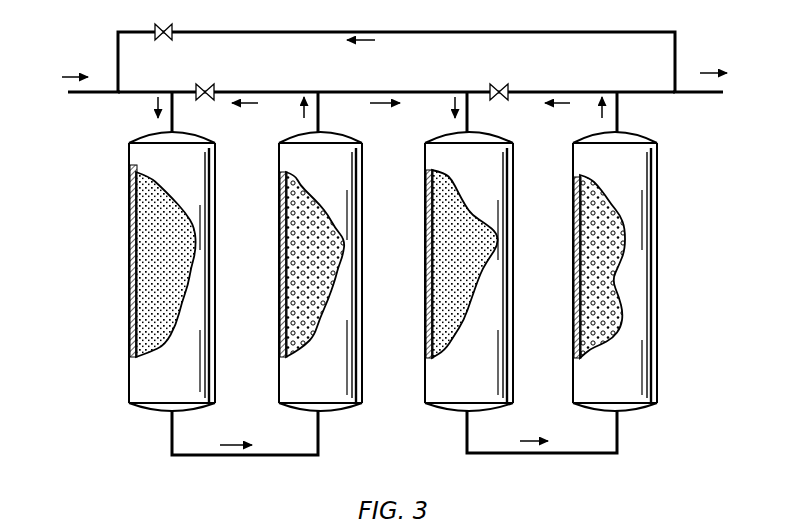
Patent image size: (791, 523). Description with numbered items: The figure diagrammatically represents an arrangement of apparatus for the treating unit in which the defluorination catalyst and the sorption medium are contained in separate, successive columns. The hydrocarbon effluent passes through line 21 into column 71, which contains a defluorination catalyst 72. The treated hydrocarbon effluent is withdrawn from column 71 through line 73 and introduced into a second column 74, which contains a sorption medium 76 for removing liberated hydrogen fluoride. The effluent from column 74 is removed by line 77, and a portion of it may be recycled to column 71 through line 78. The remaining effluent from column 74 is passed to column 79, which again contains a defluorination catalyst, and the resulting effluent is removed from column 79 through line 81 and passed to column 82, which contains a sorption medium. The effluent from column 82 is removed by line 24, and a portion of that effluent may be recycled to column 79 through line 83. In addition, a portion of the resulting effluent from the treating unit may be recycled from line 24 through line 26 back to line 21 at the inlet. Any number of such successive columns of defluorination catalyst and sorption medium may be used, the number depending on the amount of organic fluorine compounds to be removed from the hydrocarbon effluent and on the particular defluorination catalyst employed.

The line 21 is at (98, 94).
The line 24 is at (698, 92).
The line 26 is at (677, 63).
The column 71 is at (154, 251).
The defluorination catalyst 72 is at (142, 279).
The line 73 is at (292, 458).
The second column 74 is at (302, 251).
The sorption medium 76 is at (295, 285).
The line 77 is at (368, 90).
The line 78 is at (226, 90).
The column 79 is at (437, 153).
The line 81 is at (575, 456).
The column 82 is at (585, 158).
The line 83 is at (522, 90).